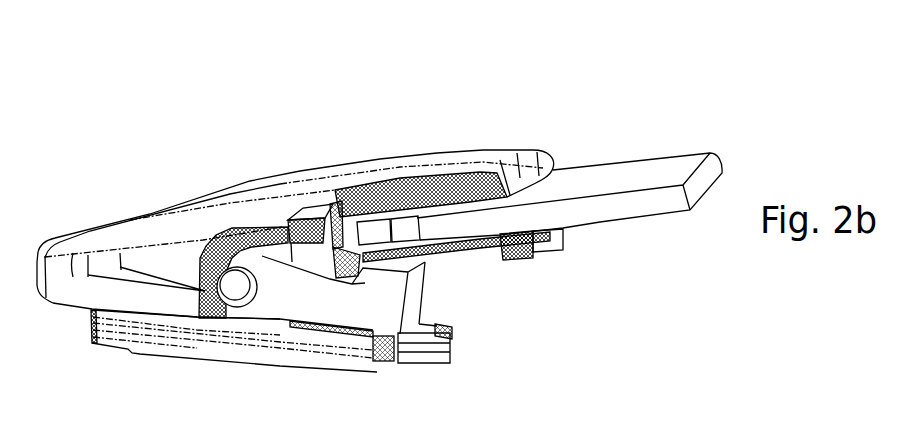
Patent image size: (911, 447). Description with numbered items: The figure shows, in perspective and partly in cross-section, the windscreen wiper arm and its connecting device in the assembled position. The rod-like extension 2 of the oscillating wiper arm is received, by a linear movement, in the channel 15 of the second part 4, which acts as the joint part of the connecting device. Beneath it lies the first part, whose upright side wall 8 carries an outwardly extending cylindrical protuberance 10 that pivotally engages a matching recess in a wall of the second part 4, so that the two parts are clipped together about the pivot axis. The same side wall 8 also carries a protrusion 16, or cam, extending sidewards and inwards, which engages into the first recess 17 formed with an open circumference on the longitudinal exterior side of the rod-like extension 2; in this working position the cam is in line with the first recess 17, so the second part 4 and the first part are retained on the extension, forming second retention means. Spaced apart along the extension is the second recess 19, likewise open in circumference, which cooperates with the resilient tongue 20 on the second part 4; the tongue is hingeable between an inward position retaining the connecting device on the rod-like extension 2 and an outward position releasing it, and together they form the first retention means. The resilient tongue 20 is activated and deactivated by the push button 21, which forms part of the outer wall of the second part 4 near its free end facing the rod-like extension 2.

The rod-like extension 2 is at (677, 30).
The second part 4 is at (260, 178).
The side wall 8 is at (317, 303).
The cylindrical protuberance 10 is at (236, 289).
The channel 15 is at (490, 213).
The protrusion 16 is at (425, 280).
The first recess 17 is at (417, 220).
The second recess 19 is at (352, 220).
The resilient tongue 20 is at (363, 265).
The push button 21 is at (306, 210).